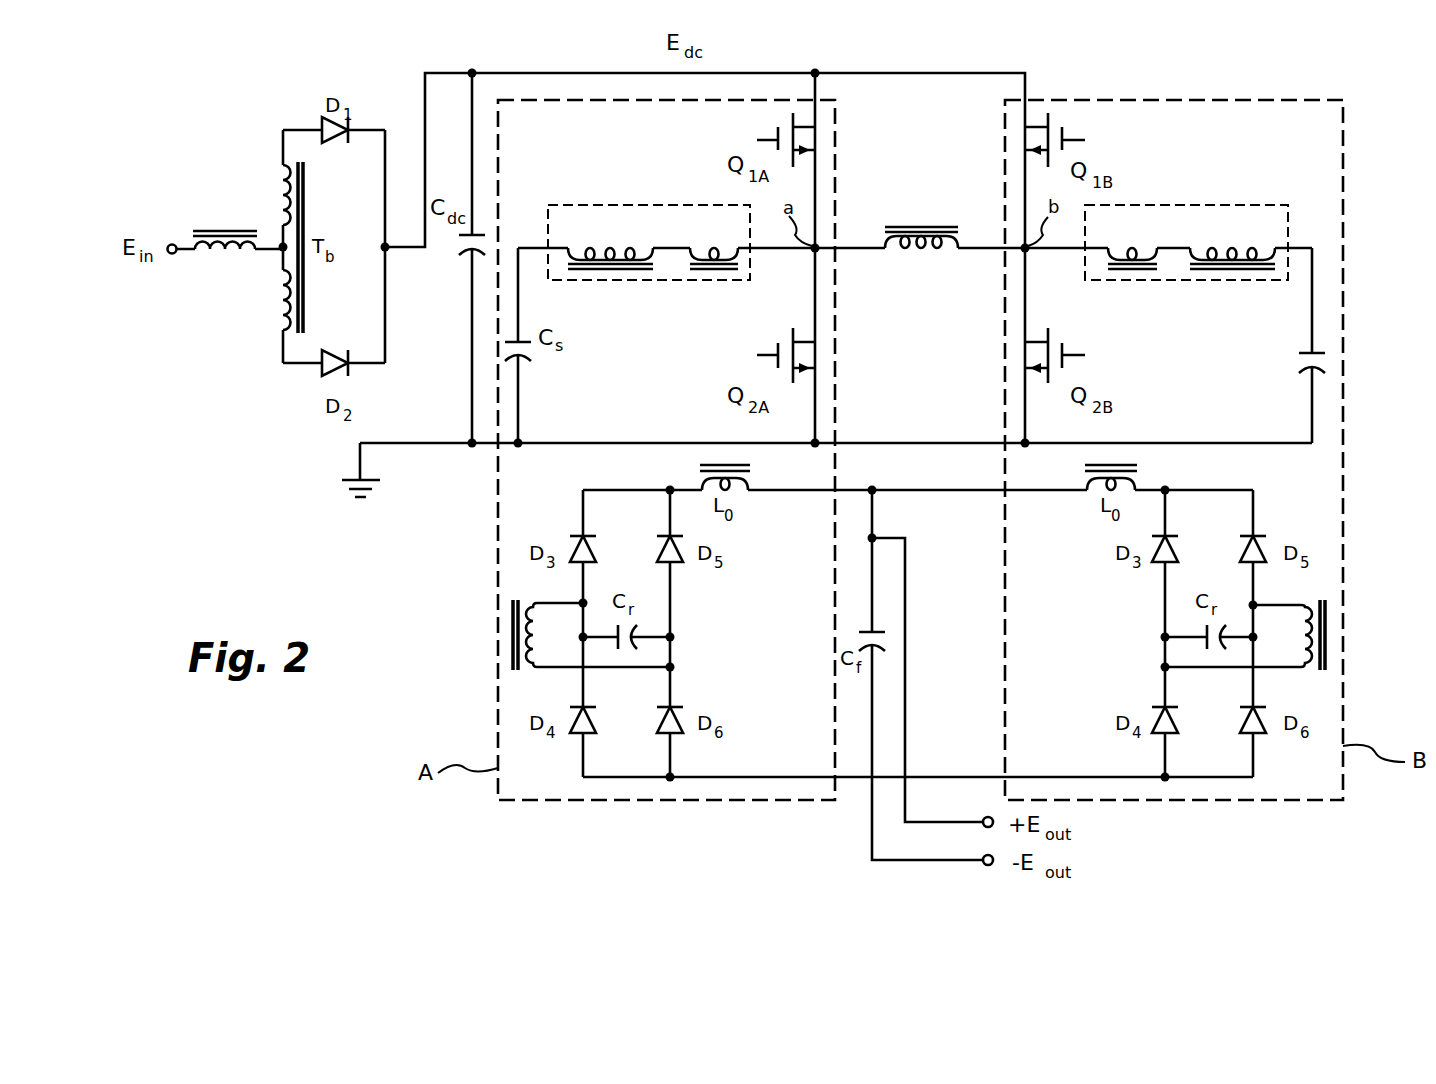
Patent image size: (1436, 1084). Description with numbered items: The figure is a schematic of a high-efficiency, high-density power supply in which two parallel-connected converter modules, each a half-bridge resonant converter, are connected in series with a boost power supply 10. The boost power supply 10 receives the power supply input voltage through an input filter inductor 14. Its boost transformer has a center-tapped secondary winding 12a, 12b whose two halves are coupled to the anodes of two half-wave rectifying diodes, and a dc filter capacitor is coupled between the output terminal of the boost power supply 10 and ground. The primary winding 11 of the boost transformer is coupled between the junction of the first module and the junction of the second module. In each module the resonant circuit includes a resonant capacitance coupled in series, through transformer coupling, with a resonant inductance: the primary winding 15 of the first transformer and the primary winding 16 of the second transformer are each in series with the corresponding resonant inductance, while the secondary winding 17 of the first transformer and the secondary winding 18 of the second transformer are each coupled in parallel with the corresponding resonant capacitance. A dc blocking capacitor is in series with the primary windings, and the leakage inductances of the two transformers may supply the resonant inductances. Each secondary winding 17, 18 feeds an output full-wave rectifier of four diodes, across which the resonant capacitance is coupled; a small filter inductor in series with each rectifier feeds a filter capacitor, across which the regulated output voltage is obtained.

The boost power supply 10 is at (270, 217).
The center-tapped secondary winding 12a is at (281, 194).
The center-tapped secondary winding 12b is at (281, 305).
The input filter inductor 14 is at (224, 262).
The primary winding 15 is at (590, 243).
The primary winding 16 is at (1210, 246).
The primary winding 11 is at (896, 252).
The secondary winding 17 is at (520, 670).
The secondary winding 18 is at (1312, 600).